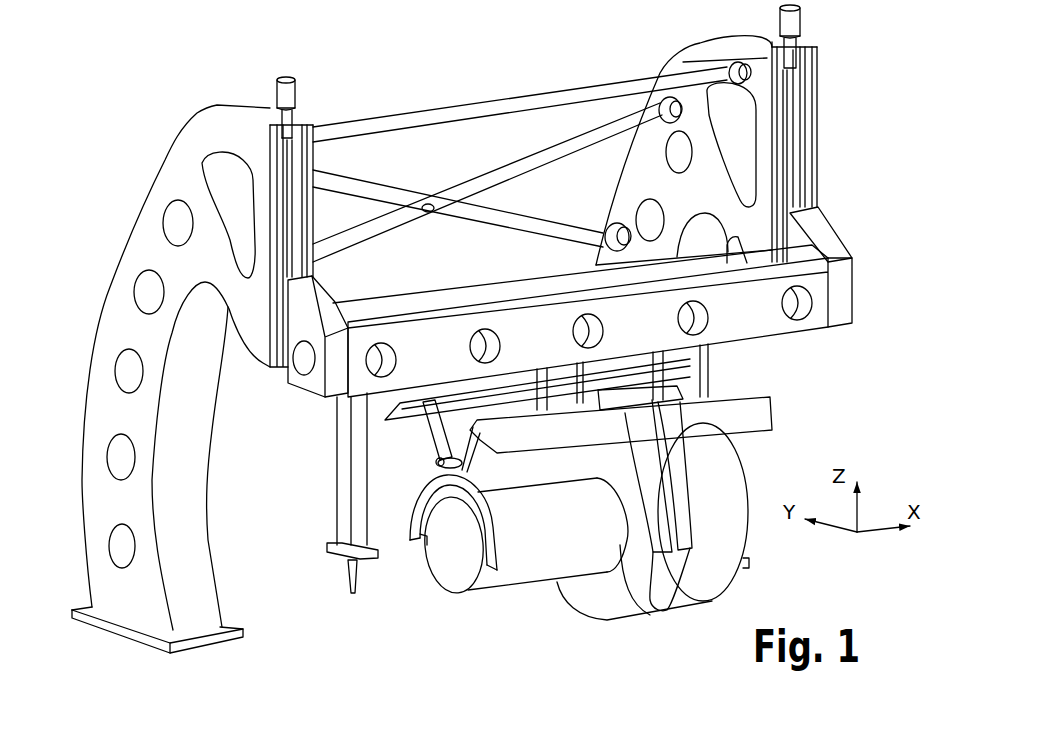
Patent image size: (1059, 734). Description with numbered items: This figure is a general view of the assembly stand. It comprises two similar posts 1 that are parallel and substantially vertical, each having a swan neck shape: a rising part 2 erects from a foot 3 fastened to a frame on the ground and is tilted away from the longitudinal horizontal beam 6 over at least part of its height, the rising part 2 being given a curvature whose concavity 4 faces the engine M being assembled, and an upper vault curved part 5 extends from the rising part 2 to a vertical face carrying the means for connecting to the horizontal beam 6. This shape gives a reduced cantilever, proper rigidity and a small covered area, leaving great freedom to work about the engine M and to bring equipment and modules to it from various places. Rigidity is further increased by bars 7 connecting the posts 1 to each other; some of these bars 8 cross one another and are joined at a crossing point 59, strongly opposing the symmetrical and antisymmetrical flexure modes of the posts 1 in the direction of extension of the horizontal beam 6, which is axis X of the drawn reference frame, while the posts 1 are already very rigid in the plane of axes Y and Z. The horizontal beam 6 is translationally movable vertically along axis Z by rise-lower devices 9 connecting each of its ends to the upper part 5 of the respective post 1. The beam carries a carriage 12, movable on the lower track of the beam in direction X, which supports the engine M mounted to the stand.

The post 1 is at (841, 72).
The rising part 2 is at (145, 386).
The foot 3 is at (137, 643).
The concavity 4 is at (222, 457).
The upper vault curved part 5 is at (182, 118).
The horizontal beam 6 is at (510, 285).
The bars 7 is at (435, 93).
The crossing bars 8 is at (553, 222).
The rise-lower device 9 is at (827, 172).
The carriage 12 is at (712, 371).
The crossing point 59 is at (427, 203).
The engine M is at (630, 633).